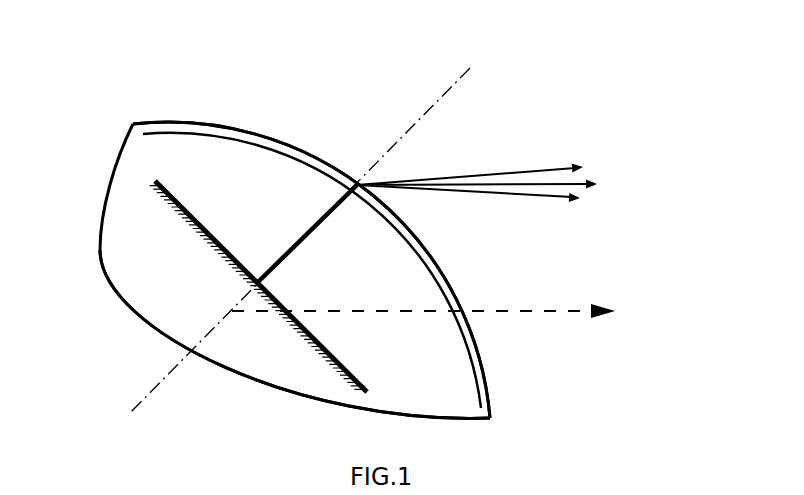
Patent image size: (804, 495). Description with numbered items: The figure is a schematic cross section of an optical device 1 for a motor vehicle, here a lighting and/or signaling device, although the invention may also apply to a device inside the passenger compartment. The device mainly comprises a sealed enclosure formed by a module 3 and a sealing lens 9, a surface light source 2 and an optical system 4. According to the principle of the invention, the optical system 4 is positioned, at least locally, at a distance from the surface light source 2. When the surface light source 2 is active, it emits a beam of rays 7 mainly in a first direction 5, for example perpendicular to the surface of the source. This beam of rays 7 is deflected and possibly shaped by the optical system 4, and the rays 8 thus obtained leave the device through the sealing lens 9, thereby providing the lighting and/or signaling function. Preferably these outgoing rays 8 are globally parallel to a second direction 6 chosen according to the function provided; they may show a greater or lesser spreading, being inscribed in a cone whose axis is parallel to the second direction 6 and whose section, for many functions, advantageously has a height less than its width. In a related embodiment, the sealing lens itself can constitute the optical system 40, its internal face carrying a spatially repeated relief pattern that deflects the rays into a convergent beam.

The optical device 1 is at (93, 152).
The surface light source 2 is at (186, 228).
The module 3 is at (253, 383).
The optical system 4 is at (478, 375).
The first direction 5 is at (170, 372).
The second direction 6 is at (551, 308).
The beam of rays 7 is at (312, 222).
The rays 8 is at (540, 185).
The sealing lens 9 is at (310, 155).
The optical system 40 is at (185, 494).